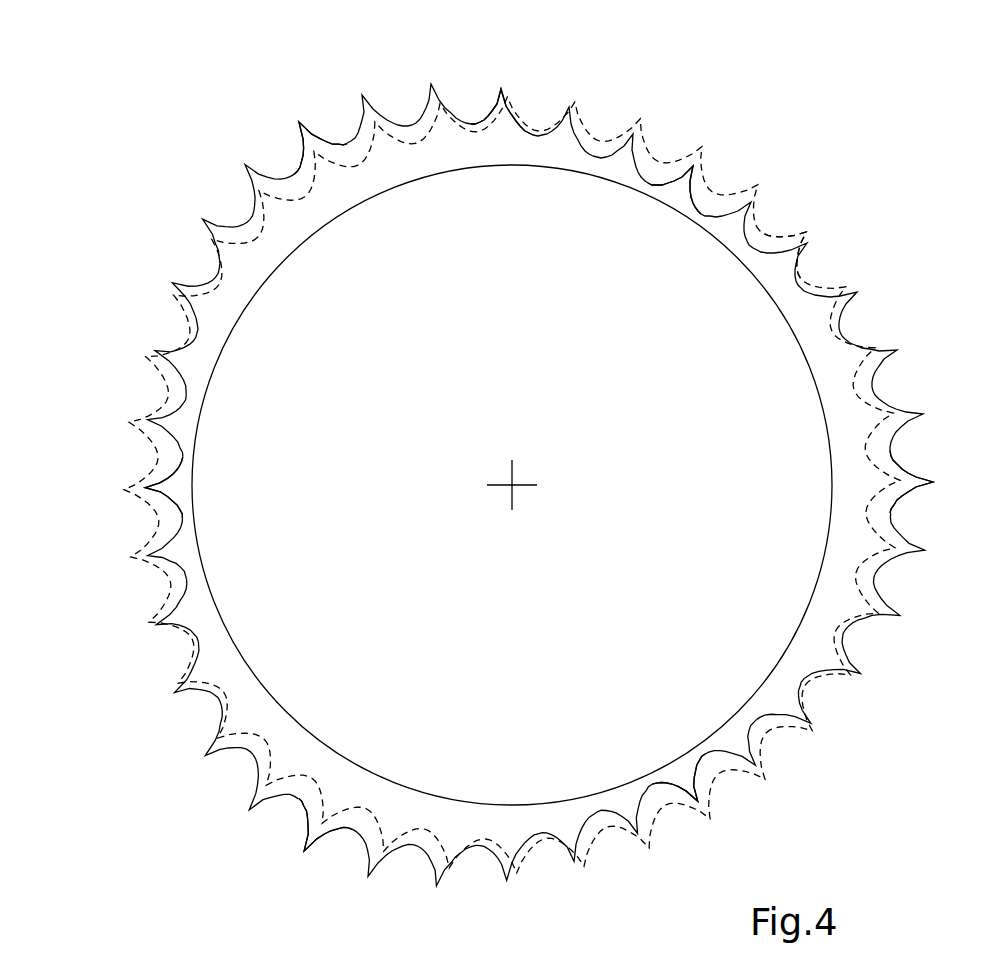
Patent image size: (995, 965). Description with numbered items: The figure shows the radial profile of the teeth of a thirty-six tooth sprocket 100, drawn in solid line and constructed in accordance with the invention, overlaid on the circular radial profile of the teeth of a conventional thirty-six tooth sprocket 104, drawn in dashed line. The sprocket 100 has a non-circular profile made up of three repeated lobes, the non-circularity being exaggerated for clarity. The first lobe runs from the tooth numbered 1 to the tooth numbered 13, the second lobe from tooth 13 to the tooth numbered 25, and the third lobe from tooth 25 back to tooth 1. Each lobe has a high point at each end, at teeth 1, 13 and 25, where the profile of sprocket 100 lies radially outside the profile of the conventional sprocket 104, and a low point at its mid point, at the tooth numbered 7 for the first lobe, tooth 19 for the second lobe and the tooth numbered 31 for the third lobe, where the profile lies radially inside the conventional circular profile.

The tooth numbered 1 is at (927, 482).
The tooth numbered 7 is at (690, 158).
The tooth numbered 13 is at (306, 129).
The tooth numbered 19 is at (124, 492).
The tooth numbered 25 is at (314, 847).
The tooth numbered 31 is at (702, 803).
The sprocket 100 is at (757, 248).
The conventional sprocket 104 is at (517, 120).